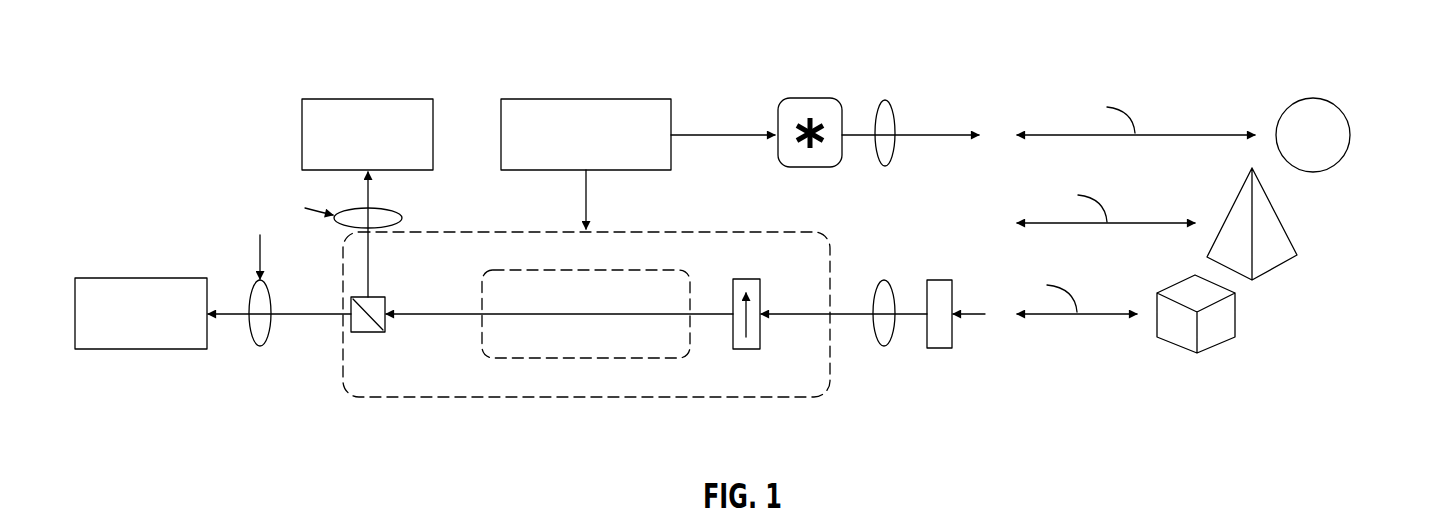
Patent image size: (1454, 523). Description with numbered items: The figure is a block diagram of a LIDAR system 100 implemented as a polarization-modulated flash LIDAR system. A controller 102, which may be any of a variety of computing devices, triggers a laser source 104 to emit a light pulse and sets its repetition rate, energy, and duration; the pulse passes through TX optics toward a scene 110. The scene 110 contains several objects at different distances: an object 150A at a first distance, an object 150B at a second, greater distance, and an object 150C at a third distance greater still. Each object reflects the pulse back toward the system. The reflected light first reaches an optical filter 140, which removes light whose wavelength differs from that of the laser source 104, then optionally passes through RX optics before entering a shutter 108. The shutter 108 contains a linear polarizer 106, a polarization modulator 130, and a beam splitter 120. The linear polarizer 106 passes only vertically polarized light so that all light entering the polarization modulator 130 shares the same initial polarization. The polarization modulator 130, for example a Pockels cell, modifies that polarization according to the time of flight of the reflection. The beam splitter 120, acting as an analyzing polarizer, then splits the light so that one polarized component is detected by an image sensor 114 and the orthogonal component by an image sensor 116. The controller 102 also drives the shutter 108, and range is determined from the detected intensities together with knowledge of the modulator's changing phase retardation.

The LIDAR system 100 is at (172, 98).
The controller 102 is at (605, 99).
The laser source 104 is at (808, 98).
The linear polarizer 106 is at (748, 279).
The shutter 108 is at (512, 232).
The scene 110 is at (1403, 97).
The image sensor 114 is at (415, 99).
The image sensor 116 is at (140, 278).
The beam splitter 120 is at (380, 297).
The polarization modulator 130 is at (675, 270).
The optical filter 140 is at (940, 348).
The object 150A is at (1235, 318).
The object 150B is at (1277, 267).
The object 150C is at (1350, 135).